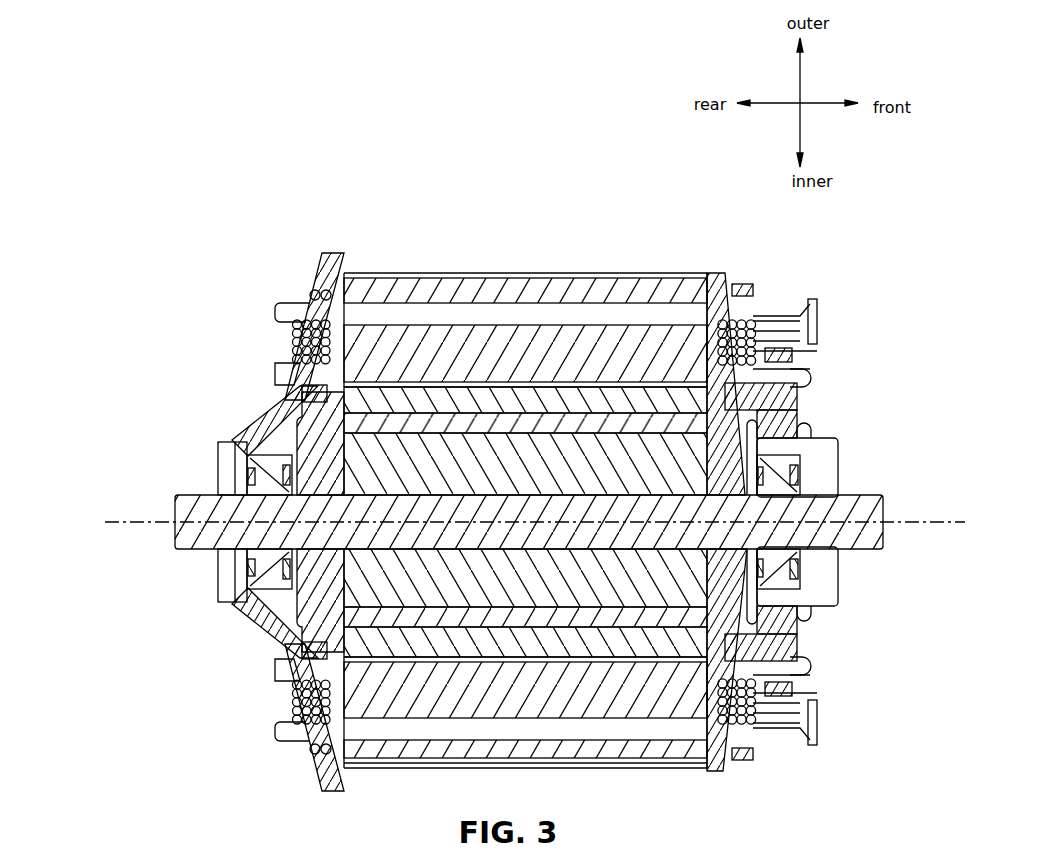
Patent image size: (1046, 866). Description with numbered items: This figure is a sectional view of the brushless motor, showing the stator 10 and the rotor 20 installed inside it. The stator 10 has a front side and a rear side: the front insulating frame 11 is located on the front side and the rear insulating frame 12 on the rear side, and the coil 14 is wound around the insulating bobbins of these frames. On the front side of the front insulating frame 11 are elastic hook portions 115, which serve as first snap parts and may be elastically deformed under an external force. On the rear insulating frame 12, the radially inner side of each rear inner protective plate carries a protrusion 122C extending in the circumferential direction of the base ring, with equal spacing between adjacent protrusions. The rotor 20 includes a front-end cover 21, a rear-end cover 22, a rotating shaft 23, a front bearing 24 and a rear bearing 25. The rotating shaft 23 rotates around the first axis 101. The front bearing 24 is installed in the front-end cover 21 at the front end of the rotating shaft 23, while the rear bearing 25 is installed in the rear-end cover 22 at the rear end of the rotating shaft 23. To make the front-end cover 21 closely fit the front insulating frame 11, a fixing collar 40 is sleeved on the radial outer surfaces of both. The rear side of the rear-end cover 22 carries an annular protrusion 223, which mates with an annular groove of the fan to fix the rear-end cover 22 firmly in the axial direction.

The stator 10 is at (473, 290).
The front insulating frame 11 is at (716, 288).
The rear insulating frame 12 is at (320, 290).
The coil 14 is at (293, 345).
The rotor 20 is at (373, 590).
The front-end cover 21 is at (786, 396).
The rear-end cover 22 is at (253, 437).
The rotating shaft 23 is at (856, 512).
The front bearing 24 is at (800, 467).
The rear bearing 25 is at (256, 483).
The fixing collar 40 is at (806, 366).
The first axis 101 is at (133, 520).
The elastic hook portion 115 is at (816, 370).
The protrusion 122C is at (300, 394).
The annular protrusion 223 is at (236, 600).